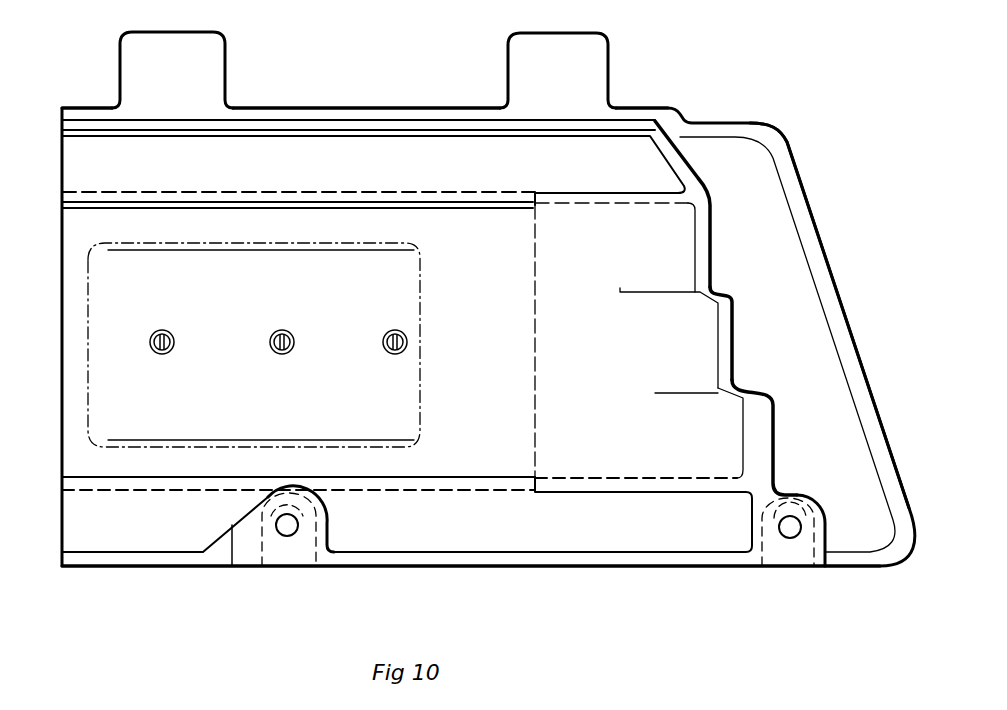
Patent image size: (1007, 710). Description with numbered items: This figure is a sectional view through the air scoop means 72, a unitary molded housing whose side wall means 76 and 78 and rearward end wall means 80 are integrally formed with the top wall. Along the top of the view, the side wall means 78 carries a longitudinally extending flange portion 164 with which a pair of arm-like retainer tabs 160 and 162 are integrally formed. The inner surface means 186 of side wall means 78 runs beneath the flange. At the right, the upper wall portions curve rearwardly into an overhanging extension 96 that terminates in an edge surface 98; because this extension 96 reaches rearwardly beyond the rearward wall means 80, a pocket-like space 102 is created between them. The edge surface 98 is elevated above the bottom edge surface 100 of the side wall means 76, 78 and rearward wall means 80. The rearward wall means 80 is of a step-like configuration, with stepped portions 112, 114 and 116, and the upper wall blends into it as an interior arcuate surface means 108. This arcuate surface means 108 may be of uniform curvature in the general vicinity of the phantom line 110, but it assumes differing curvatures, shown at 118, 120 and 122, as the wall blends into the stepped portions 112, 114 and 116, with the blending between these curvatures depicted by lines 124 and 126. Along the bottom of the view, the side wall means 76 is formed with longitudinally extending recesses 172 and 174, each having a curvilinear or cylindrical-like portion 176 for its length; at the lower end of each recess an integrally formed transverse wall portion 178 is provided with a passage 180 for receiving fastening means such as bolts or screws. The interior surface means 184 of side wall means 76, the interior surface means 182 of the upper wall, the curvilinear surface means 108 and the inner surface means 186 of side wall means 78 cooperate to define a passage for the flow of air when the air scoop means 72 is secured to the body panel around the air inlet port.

The air scoop means 72 is at (692, 72).
The side wall means 76 is at (597, 570).
The side wall means 78 is at (395, 106).
The rearward end wall means 80 is at (736, 344).
The overhanging extension 96 is at (838, 292).
The edge surface 98 is at (851, 352).
The bottom edge surface 100 is at (355, 132).
The pocket-like space 102 is at (820, 366).
The arcuate surface means 108 is at (588, 378).
The phantom line 110 is at (533, 297).
The stepped portion 112 is at (712, 242).
The stepped portion 114 is at (732, 340).
The stepped portion 116 is at (745, 430).
The differing curvature 118 is at (680, 264).
The differing curvature 120 is at (712, 391).
The differing curvature 122 is at (730, 429).
The blending line 124 is at (647, 293).
The blending line 126 is at (688, 395).
The tab 160 is at (226, 72).
The tab 162 is at (610, 60).
The flange portion 164 is at (312, 107).
The recess 172 is at (306, 538).
The recess 174 is at (805, 538).
The cylindrical-like portion 176 is at (262, 496).
The transverse wall portion 178 is at (278, 552).
The passage 180 is at (293, 515).
The interior surface means 182 is at (290, 278).
The interior surface means 184 is at (440, 552).
The inner surface means 186 is at (448, 138).